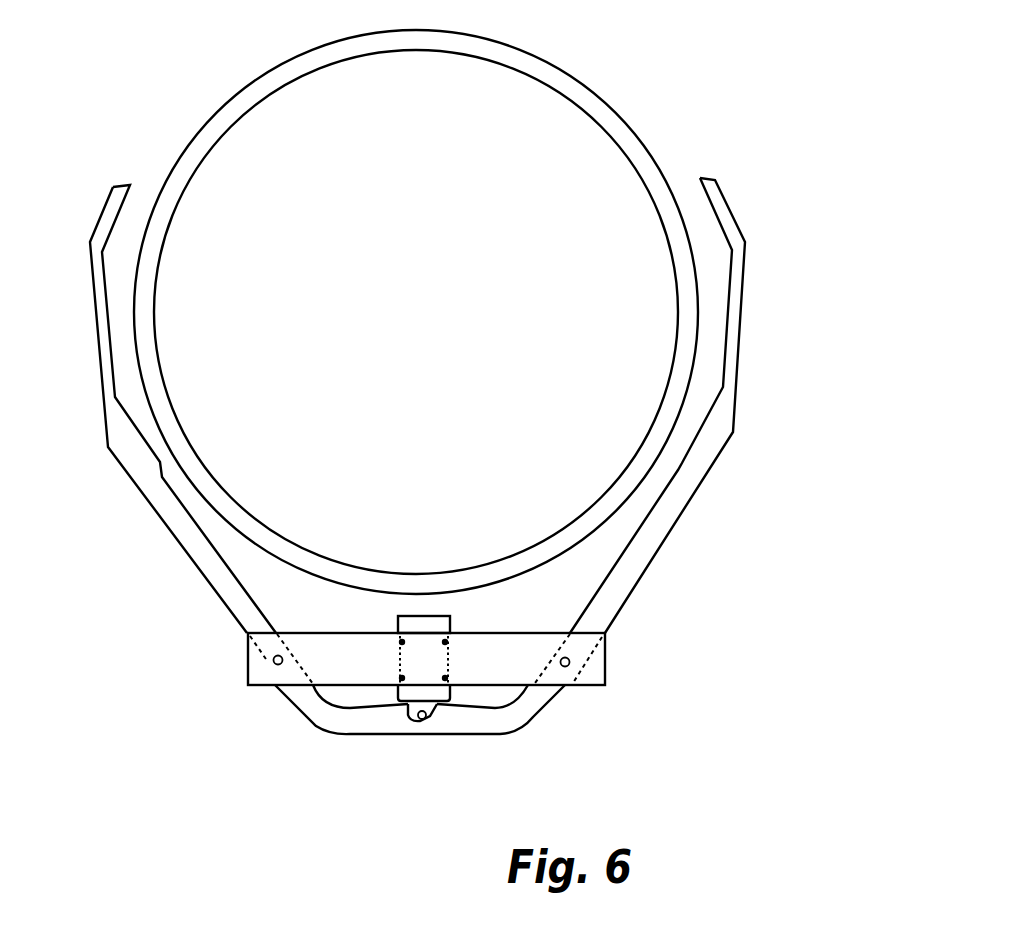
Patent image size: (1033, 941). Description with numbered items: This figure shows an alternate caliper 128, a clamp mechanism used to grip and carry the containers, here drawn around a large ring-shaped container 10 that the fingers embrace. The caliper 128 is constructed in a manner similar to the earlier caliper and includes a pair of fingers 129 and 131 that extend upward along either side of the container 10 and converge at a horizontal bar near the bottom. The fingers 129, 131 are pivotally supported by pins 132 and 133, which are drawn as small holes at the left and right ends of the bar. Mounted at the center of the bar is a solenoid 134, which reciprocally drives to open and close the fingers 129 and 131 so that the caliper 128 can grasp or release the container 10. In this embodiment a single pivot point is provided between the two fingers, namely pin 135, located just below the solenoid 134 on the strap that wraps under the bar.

The ring 10 is at (630, 128).
The caliper 128 is at (767, 403).
The finger 129 is at (165, 500).
The finger 131 is at (660, 533).
The pin 132 is at (275, 665).
The pin 133 is at (570, 662).
The solenoid 134 is at (448, 622).
The pin 135 is at (422, 720).